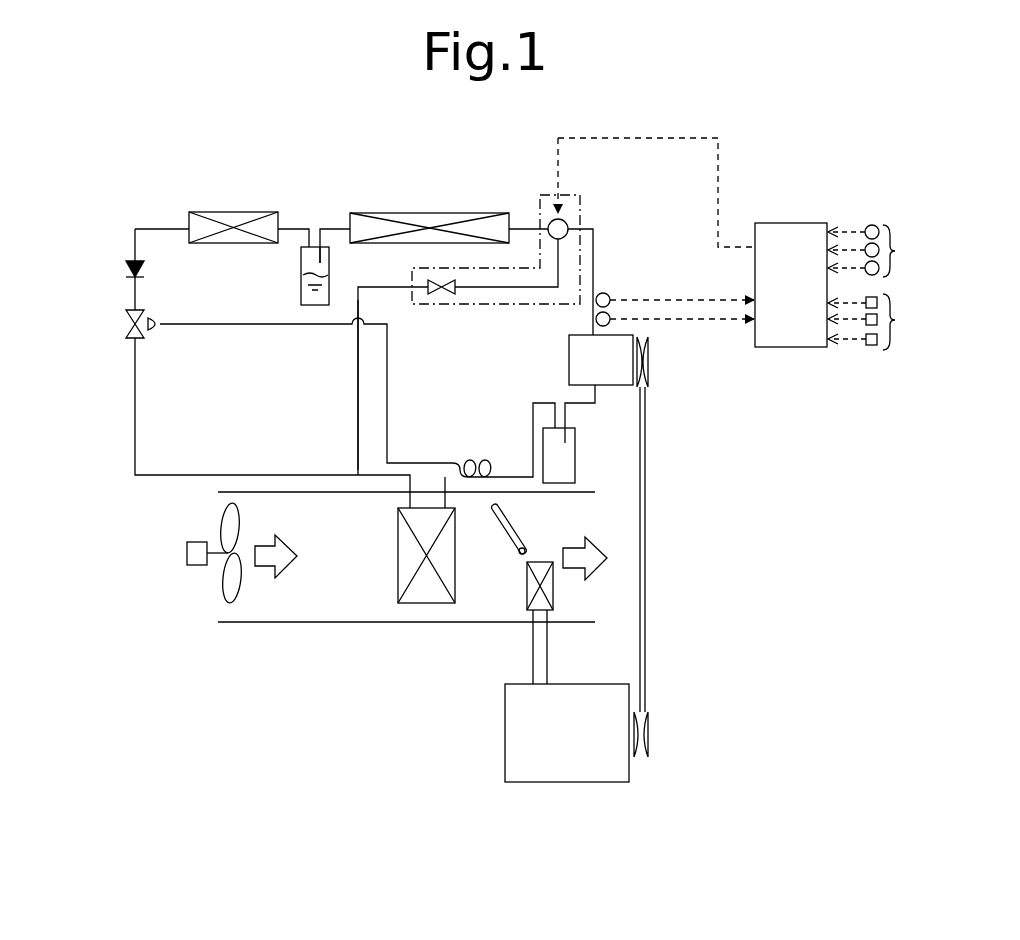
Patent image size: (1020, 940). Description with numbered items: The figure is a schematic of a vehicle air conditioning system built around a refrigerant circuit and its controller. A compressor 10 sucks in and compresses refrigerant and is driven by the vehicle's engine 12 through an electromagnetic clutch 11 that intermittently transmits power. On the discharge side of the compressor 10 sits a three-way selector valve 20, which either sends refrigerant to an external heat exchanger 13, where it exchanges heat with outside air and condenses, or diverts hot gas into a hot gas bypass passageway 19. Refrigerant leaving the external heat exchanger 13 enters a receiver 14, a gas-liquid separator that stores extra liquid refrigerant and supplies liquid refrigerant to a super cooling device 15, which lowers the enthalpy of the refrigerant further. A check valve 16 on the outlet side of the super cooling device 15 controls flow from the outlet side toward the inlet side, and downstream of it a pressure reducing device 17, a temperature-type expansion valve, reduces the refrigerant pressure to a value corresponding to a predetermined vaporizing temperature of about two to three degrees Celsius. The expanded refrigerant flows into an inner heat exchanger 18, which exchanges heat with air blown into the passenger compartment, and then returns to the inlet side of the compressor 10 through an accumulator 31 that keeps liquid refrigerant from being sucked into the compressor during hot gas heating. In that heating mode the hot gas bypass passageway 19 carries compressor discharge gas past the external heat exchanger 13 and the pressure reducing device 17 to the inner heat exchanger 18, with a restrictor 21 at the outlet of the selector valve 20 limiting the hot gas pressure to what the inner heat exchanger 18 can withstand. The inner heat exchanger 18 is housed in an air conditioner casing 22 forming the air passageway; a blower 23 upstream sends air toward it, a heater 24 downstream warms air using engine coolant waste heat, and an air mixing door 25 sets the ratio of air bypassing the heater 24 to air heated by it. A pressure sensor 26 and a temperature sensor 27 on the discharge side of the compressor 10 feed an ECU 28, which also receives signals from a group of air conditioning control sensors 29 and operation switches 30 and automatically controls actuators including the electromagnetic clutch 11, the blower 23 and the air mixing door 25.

The compressor 10 is at (569, 370).
The electromagnetic clutch 11 is at (650, 358).
The engine 12 is at (505, 743).
The external heat exchanger 13 is at (432, 213).
The receiver 14 is at (301, 268).
The super cooling device 15 is at (240, 212).
The check valve 16 is at (126, 268).
The pressure reducing device 17 is at (126, 326).
The inner heat exchanger 18 is at (398, 586).
The hot gas bypass passageway 19 is at (358, 377).
The three-way selector valve 20 is at (551, 221).
The restrictor 21 is at (446, 297).
The air conditioner casing 22 is at (334, 622).
The blower 23 is at (220, 589).
The heater 24 is at (543, 562).
The air mixing door 25 is at (504, 531).
The pressure sensor 26 is at (597, 323).
The temperature sensor 27 is at (608, 294).
The ECU 28 is at (792, 223).
The group of air conditioning control sensors 29 is at (878, 251).
The operation switches 30 is at (878, 322).
The accumulator 31 is at (576, 456).